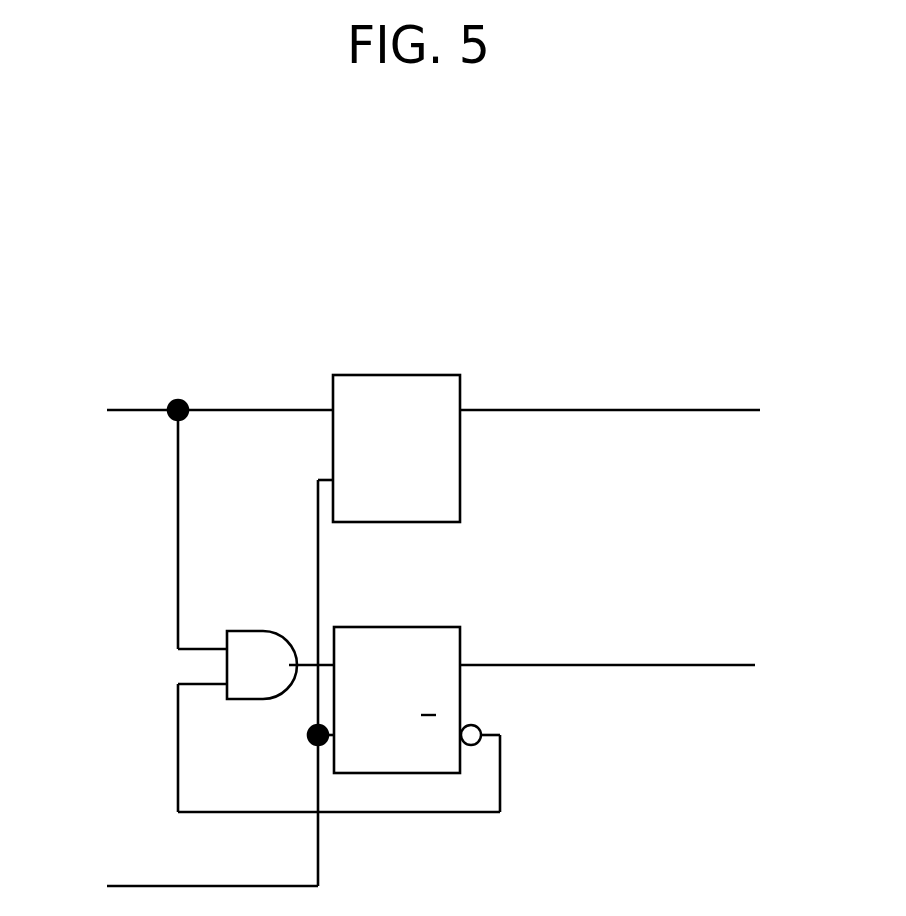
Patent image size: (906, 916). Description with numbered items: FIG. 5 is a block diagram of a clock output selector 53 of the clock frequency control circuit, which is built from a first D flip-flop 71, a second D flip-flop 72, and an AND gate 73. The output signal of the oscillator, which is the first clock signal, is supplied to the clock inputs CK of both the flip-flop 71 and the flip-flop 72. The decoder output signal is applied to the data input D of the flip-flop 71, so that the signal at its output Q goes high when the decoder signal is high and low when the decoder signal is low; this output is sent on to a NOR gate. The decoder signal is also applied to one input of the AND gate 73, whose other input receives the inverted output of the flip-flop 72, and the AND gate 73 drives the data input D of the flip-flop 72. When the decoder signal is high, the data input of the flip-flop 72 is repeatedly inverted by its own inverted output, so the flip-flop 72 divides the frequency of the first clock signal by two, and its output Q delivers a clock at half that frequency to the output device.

The clock output selector 53 is at (154, 279).
The D flip-flop 71 is at (380, 375).
The D flip-flop 72 is at (378, 627).
The AND gate 73 is at (236, 631).